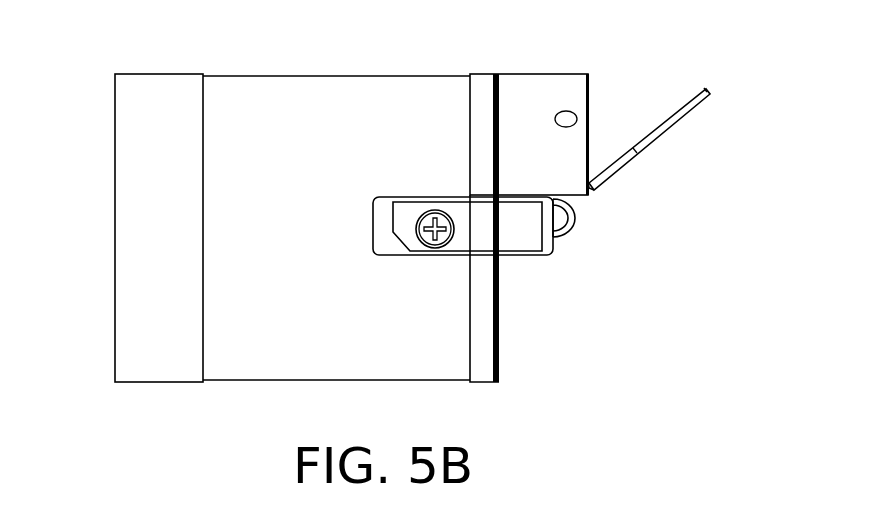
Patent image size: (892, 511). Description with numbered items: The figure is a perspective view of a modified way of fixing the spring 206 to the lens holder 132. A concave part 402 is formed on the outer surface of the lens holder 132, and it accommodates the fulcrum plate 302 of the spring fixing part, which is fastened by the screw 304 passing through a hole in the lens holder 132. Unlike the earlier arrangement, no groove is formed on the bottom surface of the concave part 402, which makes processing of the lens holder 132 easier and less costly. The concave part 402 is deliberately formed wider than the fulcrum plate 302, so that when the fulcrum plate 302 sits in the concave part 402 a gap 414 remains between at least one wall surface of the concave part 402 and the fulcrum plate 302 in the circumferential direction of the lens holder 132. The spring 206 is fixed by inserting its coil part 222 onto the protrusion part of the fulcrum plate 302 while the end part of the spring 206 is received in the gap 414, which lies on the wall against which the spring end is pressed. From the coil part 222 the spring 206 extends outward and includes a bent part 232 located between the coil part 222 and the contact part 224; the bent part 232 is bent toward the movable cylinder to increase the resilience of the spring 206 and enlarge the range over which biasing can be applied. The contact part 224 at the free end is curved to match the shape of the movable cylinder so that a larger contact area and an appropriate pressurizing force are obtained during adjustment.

The lens holder 132 is at (228, 74).
The spring 206 is at (655, 131).
The coil part 222 is at (570, 227).
The contact part 224 is at (710, 97).
The bent part 232 is at (600, 188).
The fulcrum plate 302 is at (525, 255).
The screw 304 is at (428, 246).
The concave part 402 is at (383, 232).
The gap 414 is at (397, 197).